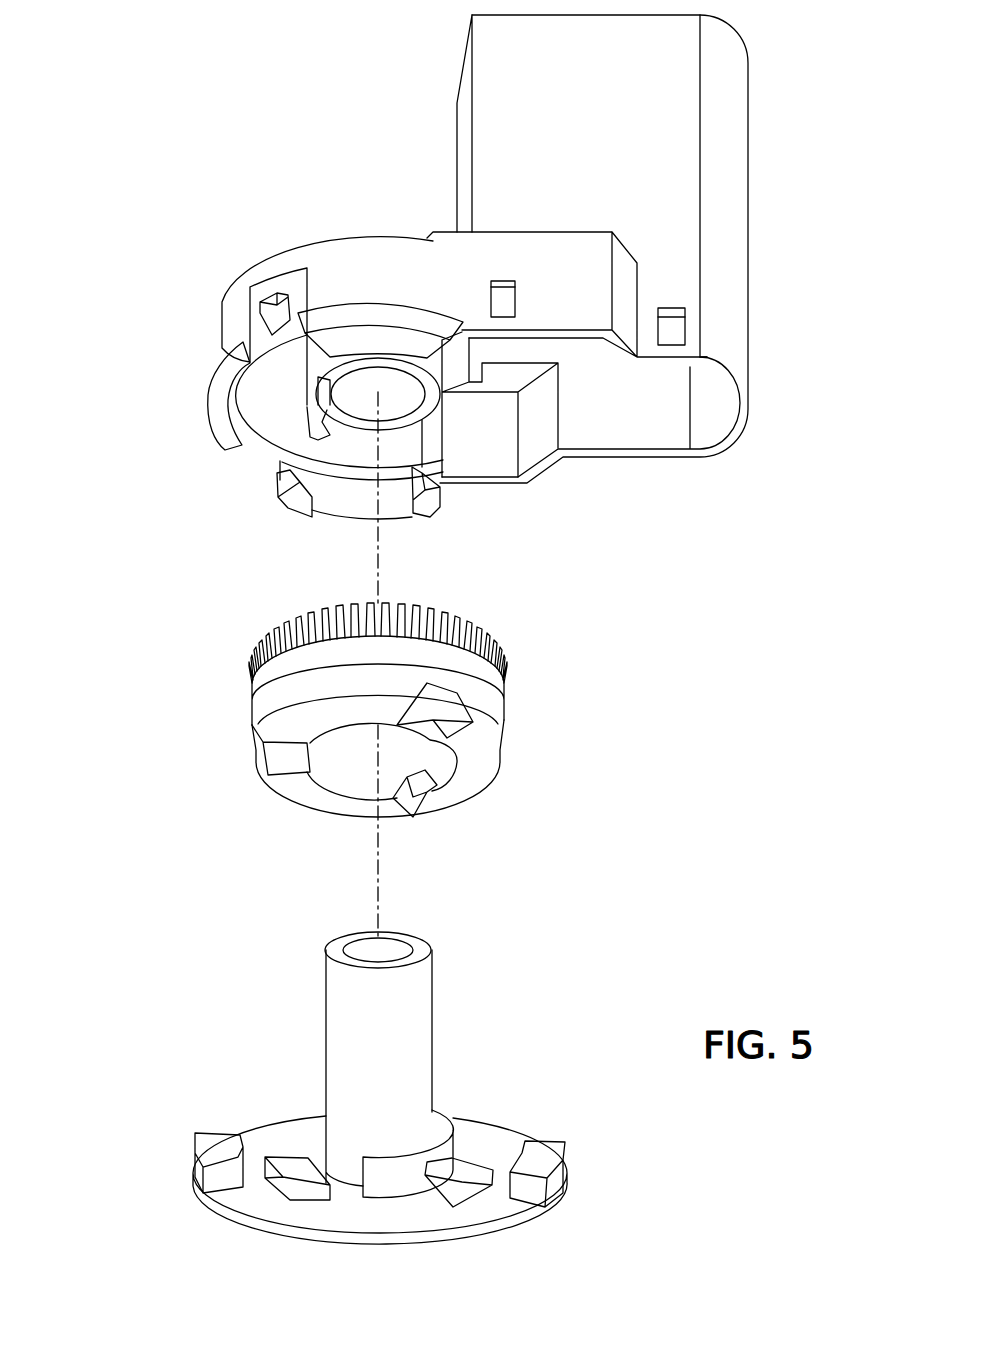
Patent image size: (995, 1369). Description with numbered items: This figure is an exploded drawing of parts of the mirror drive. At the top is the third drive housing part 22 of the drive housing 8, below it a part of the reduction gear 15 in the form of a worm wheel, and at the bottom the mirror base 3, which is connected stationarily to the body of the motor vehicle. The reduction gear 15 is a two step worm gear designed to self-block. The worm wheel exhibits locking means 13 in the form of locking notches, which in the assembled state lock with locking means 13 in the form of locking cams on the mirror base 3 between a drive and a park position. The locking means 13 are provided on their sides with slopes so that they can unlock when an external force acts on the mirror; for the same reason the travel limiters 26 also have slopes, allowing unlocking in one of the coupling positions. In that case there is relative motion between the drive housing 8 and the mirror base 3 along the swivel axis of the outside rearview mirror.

The drive housing 8 is at (478, 267).
The third drive housing part 22 is at (473, 167).
The travel limiters 26 is at (380, 340).
The reduction gear 15 is at (233, 722).
The locking means 13 is at (470, 704).
The mirror base 3 is at (337, 1218).